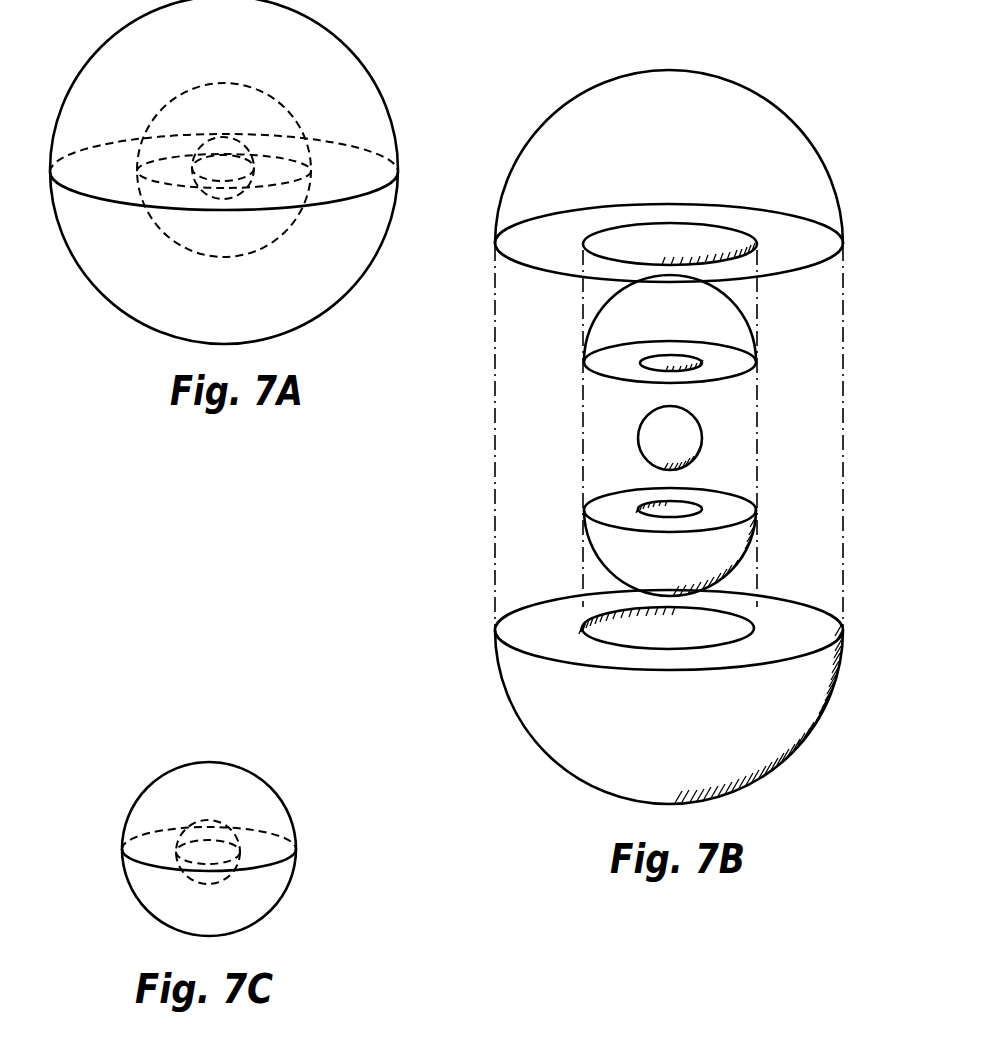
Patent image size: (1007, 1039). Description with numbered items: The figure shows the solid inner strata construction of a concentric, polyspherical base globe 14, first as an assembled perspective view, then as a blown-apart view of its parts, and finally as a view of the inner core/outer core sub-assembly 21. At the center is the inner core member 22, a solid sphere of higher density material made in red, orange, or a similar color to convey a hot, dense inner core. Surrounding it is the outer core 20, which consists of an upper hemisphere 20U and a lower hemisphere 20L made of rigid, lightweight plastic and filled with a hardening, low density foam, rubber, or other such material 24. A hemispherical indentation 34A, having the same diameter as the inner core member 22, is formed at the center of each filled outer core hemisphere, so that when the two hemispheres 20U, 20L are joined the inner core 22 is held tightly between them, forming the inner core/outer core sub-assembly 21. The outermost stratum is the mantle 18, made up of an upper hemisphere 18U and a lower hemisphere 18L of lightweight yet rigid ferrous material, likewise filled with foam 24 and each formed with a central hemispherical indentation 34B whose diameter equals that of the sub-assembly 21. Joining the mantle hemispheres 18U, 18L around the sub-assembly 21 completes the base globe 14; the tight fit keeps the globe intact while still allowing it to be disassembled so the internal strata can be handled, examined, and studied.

In FIG. 7A, the base globe 14 is at (238, 190).
In FIG. 7A, the mantle 18 is at (165, 290).
In FIG. 7A, the outer core 20 is at (170, 237).
In FIG. 7C, the outer core 20 is at (272, 827).
In FIG. 7A, the inner core member 22 is at (192, 178).
In FIG. 7B, the inner core member 22 is at (648, 440).
In FIG. 7C, the inner core member 22 is at (187, 848).
In FIG. 7C, the inner core/outer core sub-assembly 21 is at (213, 829).
In FIG. 7B, the upper mantle hemisphere 18U is at (762, 142).
In FIG. 7B, the lower mantle hemisphere 18L is at (538, 677).
In FIG. 7B, the upper outer core hemisphere 20U is at (733, 337).
In FIG. 7B, the lower outer core hemisphere 20L is at (598, 527).
In FIG. 7B, the foam filling material 24 is at (539, 232).
In FIG. 7B, the hemispherical indentation in outer core hemispheres 34A is at (650, 370).
In FIG. 7B, the hemispherical indentation in mantle hemispheres 34B is at (612, 243).